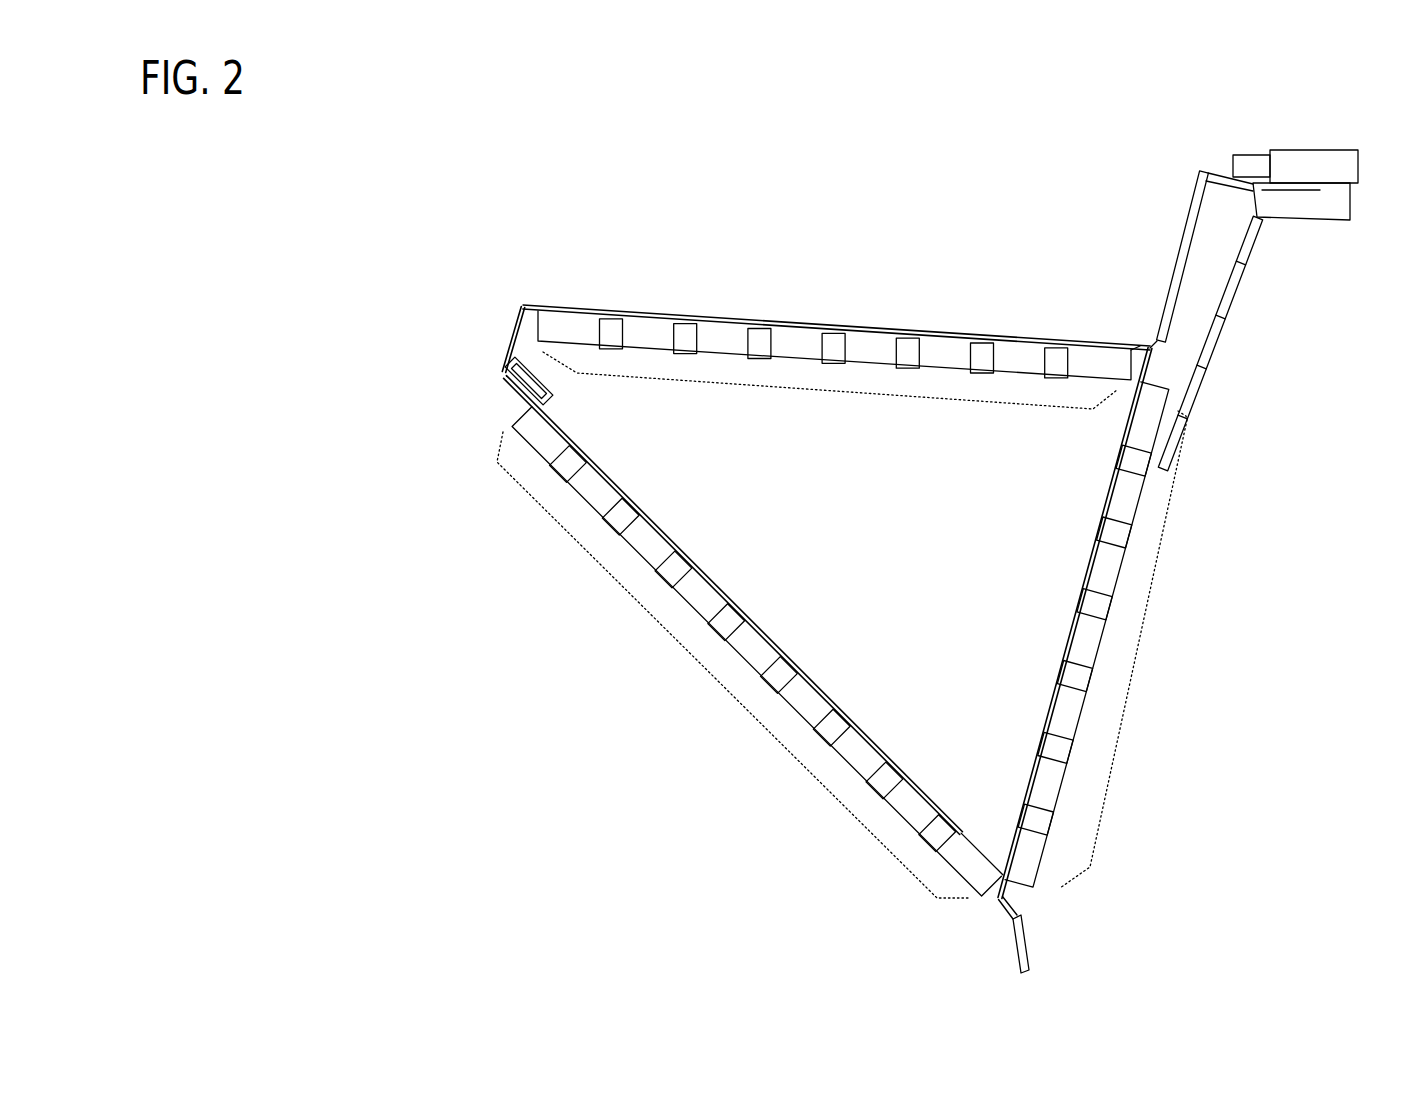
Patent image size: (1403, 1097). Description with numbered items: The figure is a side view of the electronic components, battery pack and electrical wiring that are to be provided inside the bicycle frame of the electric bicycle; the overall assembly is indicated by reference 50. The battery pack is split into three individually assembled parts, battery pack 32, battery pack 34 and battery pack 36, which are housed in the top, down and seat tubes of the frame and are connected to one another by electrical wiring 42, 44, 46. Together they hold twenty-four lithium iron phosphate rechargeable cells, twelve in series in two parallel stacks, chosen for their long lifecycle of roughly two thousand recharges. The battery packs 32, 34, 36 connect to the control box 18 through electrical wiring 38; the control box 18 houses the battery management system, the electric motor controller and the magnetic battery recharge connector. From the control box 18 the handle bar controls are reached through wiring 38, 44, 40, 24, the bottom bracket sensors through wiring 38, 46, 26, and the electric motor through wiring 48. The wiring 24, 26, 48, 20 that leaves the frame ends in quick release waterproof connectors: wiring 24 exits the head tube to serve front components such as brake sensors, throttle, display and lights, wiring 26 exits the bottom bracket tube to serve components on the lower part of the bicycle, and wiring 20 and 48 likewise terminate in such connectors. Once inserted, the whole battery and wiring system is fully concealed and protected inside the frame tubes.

The control box 18 is at (1295, 261).
The electrical wiring 20 is at (1156, 256).
The electrical wiring 24 is at (597, 397).
The electrical wiring 26 is at (1107, 927).
The battery pack 32 is at (830, 406).
The battery pack 34 is at (733, 665).
The battery pack 36 is at (1157, 649).
The electrical wiring 38 is at (1108, 303).
The electrical wiring 40 is at (494, 349).
The electrical wiring 42 is at (753, 636).
The electrical wiring 44 is at (836, 319).
The electrical wiring 46 is at (1054, 623).
The electrical wiring 48 is at (1258, 366).
The frame assembly 50 is at (896, 550).